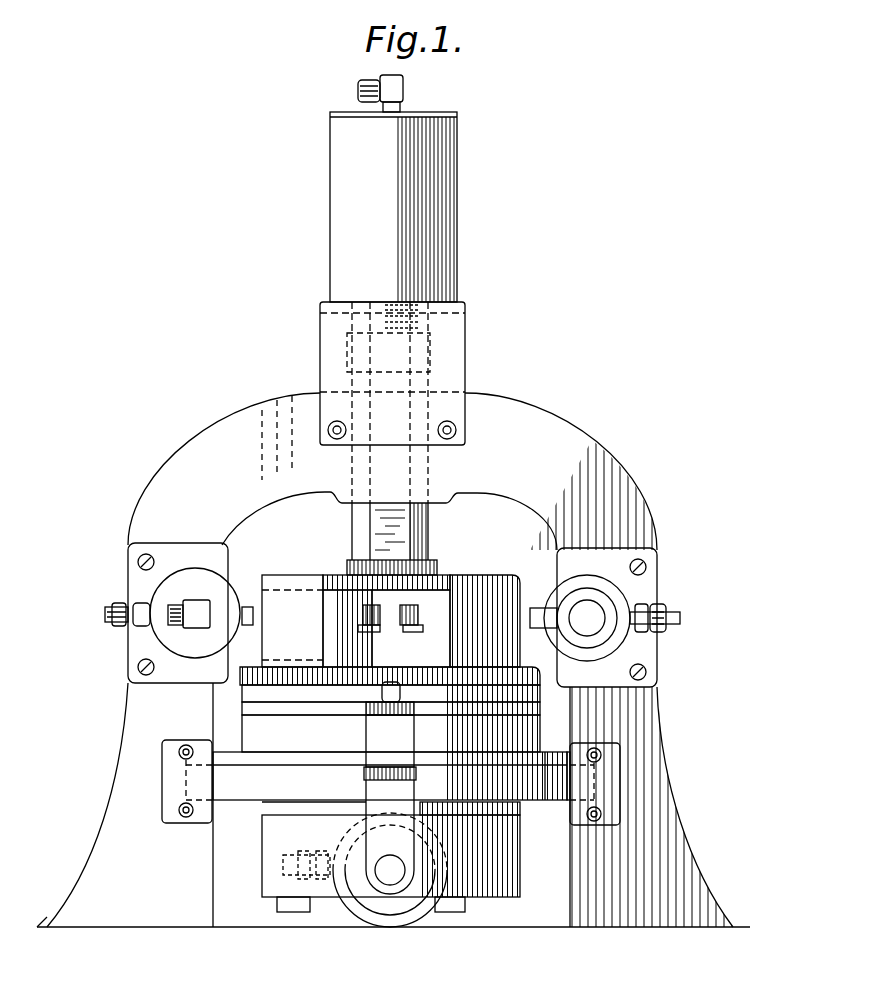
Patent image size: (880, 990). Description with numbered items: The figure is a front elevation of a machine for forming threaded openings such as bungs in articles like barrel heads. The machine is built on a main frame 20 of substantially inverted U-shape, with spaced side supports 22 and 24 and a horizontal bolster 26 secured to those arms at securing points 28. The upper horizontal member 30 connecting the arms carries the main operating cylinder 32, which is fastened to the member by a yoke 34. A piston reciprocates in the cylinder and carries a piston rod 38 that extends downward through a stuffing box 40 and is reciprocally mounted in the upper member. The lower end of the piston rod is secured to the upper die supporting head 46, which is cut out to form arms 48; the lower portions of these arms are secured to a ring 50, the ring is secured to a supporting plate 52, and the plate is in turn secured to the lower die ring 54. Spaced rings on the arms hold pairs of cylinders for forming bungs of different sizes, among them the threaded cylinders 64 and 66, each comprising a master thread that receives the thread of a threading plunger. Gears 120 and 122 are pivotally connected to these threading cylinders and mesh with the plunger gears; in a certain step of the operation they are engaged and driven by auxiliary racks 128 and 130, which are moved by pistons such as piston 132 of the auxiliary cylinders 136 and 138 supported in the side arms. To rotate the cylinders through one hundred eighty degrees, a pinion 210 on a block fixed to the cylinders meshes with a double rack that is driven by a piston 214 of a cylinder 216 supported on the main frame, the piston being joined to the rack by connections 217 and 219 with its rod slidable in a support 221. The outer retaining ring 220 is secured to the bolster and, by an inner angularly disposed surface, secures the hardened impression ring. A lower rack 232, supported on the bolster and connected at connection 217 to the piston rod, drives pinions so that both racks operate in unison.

The main frame 20 is at (592, 440).
The side support 22 is at (655, 740).
The side support 24 is at (130, 720).
The horizontal bolster 26 is at (238, 795).
The securing means 28 is at (172, 823).
The upper horizontal member 30 is at (283, 398).
The main operating cylinder 32 is at (445, 184).
The yoke 34 is at (460, 332).
The piston rod 38 is at (413, 380).
The stuffing box 40 is at (430, 352).
The upper die supporting head 46 is at (481, 582).
The arms 48 is at (547, 681).
The ring 50 is at (245, 690).
The supporting plate 52 is at (245, 706).
The lower die ring 54 is at (245, 727).
The threaded cylinder 64 is at (433, 600).
The threaded cylinder 66 is at (340, 600).
The gear 120 is at (400, 612).
The gear 122 is at (368, 626).
The auxiliary rack 128 is at (533, 600).
The auxiliary rack 130 is at (245, 605).
The piston 132 is at (600, 625).
The auxiliary cylinder 136 is at (627, 600).
The auxiliary cylinder 138 is at (175, 590).
The pinion 210 is at (385, 880).
The piston 214 is at (402, 706).
The cylinder 216 is at (380, 700).
The connection 217 is at (400, 840).
The connection 219 is at (408, 740).
The outer retaining ring 220 is at (548, 752).
The support 221 is at (405, 878).
The rack 232 is at (400, 774).